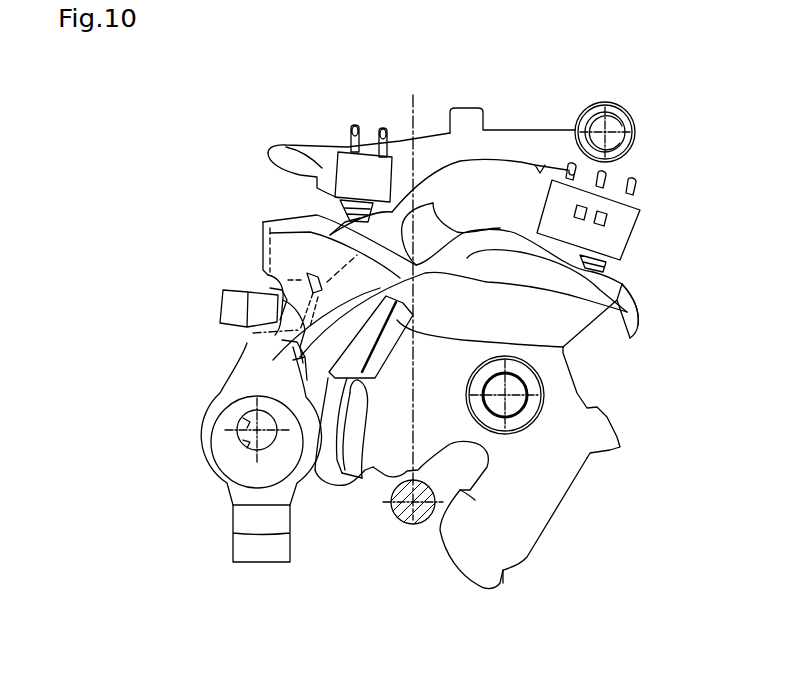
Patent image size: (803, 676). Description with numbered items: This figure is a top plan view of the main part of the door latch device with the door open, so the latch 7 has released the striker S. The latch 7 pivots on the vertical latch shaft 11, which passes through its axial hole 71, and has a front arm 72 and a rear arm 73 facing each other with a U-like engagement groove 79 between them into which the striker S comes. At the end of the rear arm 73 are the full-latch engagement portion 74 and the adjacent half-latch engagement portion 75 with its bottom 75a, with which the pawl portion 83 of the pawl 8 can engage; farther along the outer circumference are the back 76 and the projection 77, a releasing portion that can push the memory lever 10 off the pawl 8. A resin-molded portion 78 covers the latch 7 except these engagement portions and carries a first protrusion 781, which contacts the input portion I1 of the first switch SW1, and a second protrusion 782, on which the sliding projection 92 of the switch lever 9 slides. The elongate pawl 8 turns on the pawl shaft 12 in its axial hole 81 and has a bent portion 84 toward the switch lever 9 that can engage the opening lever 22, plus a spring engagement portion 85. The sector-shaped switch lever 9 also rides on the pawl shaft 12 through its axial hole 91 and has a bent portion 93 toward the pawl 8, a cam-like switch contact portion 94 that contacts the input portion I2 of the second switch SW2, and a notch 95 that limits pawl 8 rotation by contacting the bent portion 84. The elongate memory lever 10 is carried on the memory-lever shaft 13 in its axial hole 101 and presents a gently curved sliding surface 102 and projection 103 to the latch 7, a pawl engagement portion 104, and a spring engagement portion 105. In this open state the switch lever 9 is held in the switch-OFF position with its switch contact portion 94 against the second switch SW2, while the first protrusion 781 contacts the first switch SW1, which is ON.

The latch 7 is at (565, 504).
The pawl 8 is at (225, 487).
The switch lever 9 is at (248, 263).
The memory lever 10 is at (268, 146).
The latch shaft 11 is at (528, 393).
The pawl shaft 12 is at (237, 438).
The memory-lever shaft 13 is at (628, 148).
The opening lever 22 is at (253, 333).
The axial hole 71 is at (518, 412).
The front arm 72 is at (500, 585).
The rear arm 73 is at (333, 480).
The full-latch engagement portion 74 is at (372, 482).
The half-latch engagement portion 75 is at (307, 440).
The bottom 75a is at (361, 488).
The back 76 is at (287, 382).
The projection 77 is at (433, 203).
The resin-molded portion 78 is at (600, 428).
The engagement groove 79 is at (472, 492).
The axial hole 81 is at (243, 420).
The pawl portion 83 is at (300, 362).
The bent portion 84 is at (222, 306).
The spring engagement portion 85 is at (233, 550).
The axial hole 91 is at (243, 441).
The sliding projection 92 is at (463, 232).
The bent portion 93 is at (263, 226).
The switch contact portion 94 is at (382, 220).
The notch 95 is at (270, 288).
The axial hole 101 is at (612, 128).
The sliding surface 102 is at (541, 170).
The projection 103 is at (411, 135).
The pawl engagement portion 104 is at (300, 175).
The spring engagement portion 105 is at (470, 108).
The first protrusion 781 is at (633, 322).
The second protrusion 782 is at (563, 347).
The first switch SW1 is at (638, 238).
The second switch SW2 is at (322, 170).
The input portion I1 is at (606, 270).
The input portion I2 is at (345, 212).
The striker S is at (403, 527).